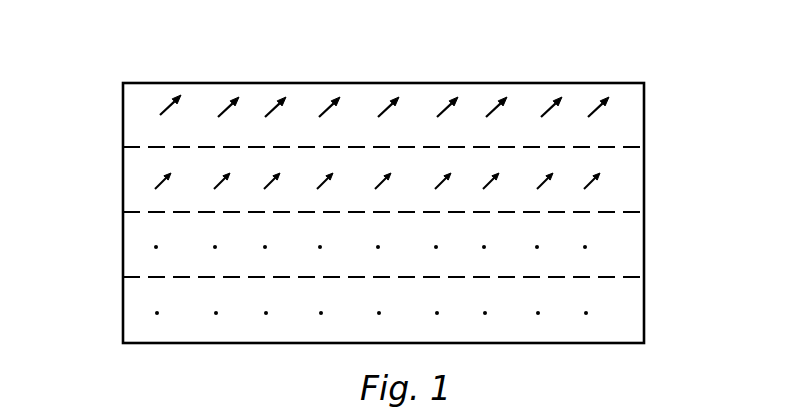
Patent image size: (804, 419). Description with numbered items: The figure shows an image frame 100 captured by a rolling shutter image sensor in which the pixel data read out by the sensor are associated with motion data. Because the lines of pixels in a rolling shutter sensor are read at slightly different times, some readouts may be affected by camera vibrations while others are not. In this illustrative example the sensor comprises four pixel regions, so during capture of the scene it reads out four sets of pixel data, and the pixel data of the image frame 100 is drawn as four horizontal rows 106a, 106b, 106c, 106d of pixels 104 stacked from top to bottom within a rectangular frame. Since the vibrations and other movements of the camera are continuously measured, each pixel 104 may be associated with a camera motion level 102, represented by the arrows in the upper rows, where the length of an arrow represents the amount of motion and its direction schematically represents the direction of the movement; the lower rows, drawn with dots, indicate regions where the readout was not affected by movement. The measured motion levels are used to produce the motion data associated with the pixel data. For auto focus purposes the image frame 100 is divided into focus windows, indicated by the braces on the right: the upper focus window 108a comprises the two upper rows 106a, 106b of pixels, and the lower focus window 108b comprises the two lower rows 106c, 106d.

The image frame 100 is at (397, 50).
The camera motion level 102 is at (172, 95).
The pixel 104 is at (151, 72).
The first row of pixels 106a is at (338, 82).
The second row of pixels 106b is at (120, 147).
The third row of pixels 106c is at (120, 212).
The fourth row of pixels 106d is at (120, 277).
The upper focus window 108a is at (668, 83).
The lower focus window 108b is at (668, 215).